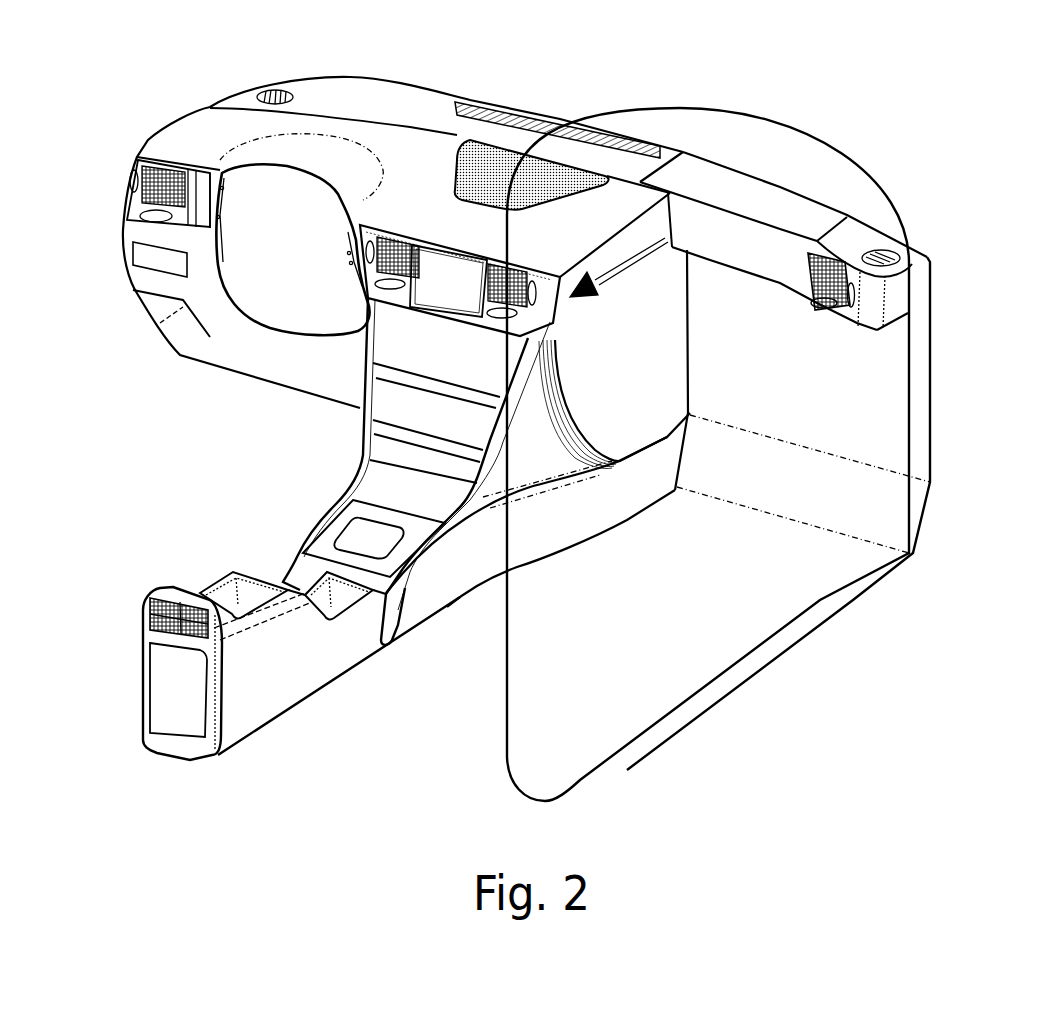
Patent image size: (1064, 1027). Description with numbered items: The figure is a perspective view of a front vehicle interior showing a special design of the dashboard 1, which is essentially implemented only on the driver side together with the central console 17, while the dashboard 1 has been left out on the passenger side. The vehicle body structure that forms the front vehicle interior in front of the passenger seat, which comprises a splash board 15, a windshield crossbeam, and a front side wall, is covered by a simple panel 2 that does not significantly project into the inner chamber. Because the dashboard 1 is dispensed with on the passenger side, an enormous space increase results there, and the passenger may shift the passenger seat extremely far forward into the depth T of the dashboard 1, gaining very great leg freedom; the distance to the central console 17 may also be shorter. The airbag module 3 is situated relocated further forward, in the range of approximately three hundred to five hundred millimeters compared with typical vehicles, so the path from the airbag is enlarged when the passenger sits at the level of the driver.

The dashboard 1 is at (410, 165).
The depth of the dashboard T is at (602, 276).
The airbag module 3 is at (805, 193).
The panel 2 is at (862, 238).
The splash board 15 is at (870, 410).
The central console 17 is at (420, 357).